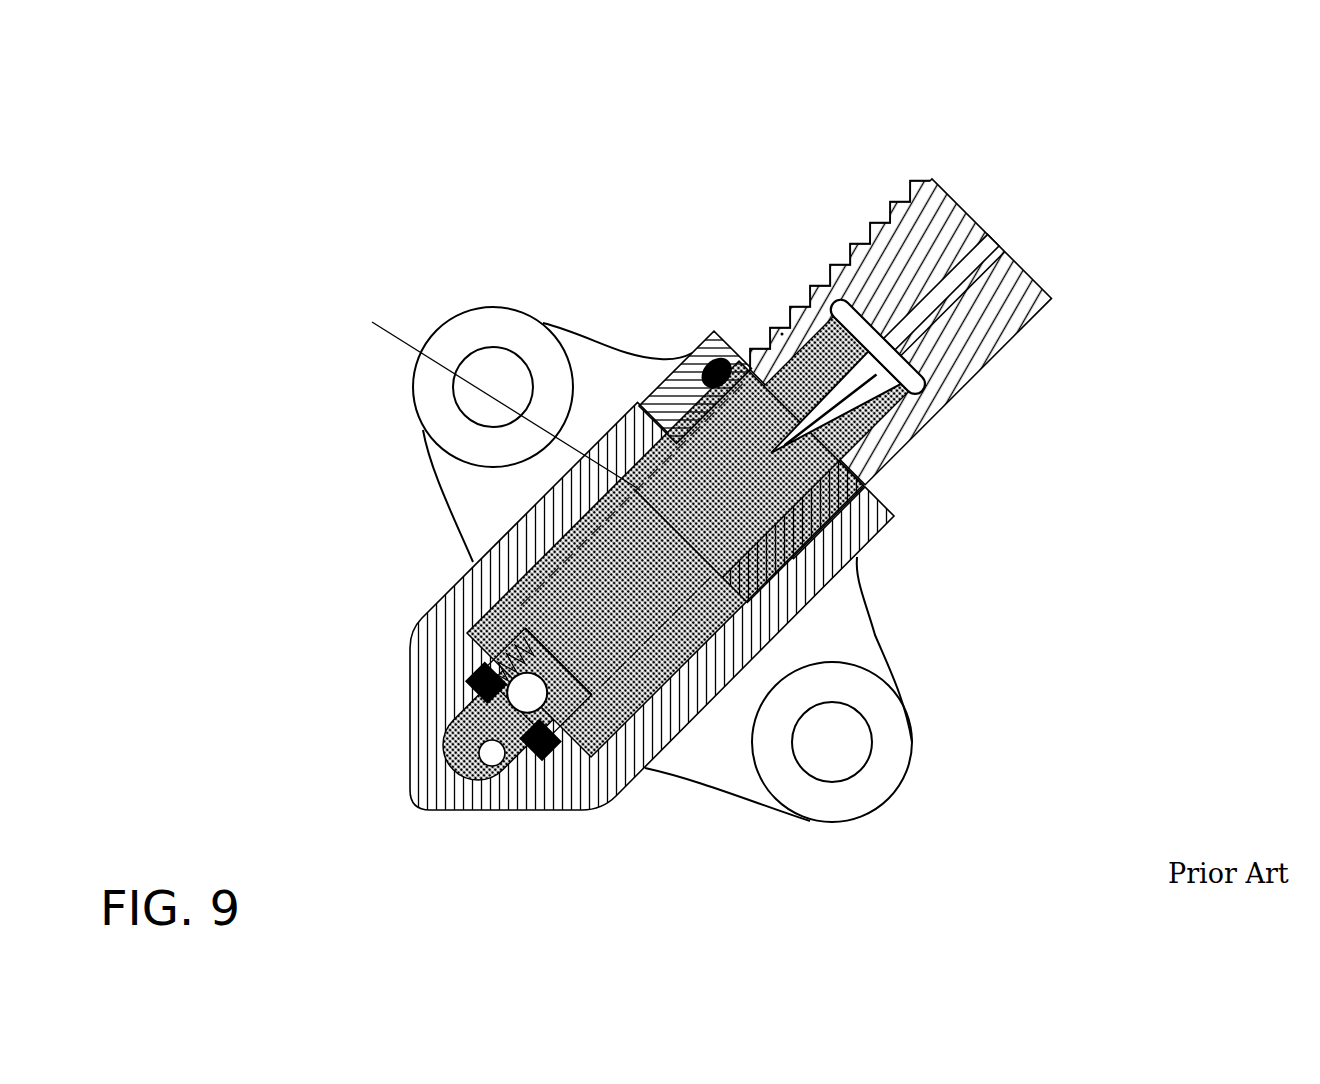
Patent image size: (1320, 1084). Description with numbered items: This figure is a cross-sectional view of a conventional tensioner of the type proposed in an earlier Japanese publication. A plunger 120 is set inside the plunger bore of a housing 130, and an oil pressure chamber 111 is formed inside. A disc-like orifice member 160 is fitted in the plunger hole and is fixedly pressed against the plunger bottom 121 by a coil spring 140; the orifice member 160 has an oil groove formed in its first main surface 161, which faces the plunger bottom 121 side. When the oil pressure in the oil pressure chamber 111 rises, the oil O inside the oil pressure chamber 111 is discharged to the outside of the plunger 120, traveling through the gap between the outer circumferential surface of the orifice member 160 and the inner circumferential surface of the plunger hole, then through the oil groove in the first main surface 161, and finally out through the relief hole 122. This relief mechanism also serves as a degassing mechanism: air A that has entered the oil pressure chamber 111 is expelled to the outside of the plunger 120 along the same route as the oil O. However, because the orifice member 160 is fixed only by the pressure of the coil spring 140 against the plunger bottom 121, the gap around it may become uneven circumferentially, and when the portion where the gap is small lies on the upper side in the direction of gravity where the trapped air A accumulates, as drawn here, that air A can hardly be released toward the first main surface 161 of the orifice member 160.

The oil pressure chamber 111 is at (655, 615).
The plunger 120 is at (1010, 362).
The plunger bottom 121 is at (973, 320).
The relief hole 122 is at (973, 257).
The housing 130 is at (807, 603).
The coil spring 140 is at (445, 594).
The orifice member 160 is at (840, 307).
The first main surface 161 is at (867, 260).
The air A is at (780, 333).
The oil O is at (497, 390).